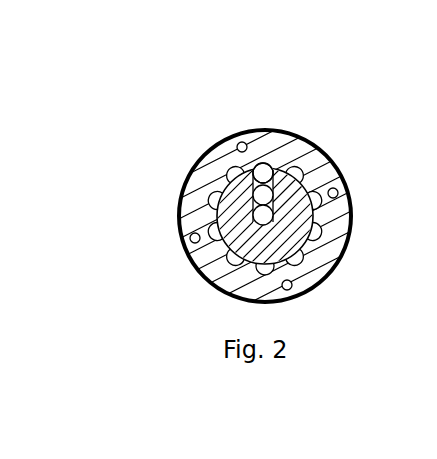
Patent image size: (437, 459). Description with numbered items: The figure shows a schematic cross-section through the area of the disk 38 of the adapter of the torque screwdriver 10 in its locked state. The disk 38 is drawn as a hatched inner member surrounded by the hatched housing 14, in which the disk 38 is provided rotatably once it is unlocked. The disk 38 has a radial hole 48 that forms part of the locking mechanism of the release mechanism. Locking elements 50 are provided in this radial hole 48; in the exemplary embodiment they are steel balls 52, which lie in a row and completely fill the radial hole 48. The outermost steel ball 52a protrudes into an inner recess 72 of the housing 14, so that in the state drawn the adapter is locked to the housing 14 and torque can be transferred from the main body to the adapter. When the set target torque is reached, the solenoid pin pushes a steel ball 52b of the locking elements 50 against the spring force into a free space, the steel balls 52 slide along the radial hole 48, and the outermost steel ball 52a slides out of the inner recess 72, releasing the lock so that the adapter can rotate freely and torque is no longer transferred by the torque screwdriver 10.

The torque screwdriver 10 is at (183, 137).
The housing 14 is at (323, 227).
The disk 38 is at (300, 232).
The radial hole 48 is at (285, 168).
The locking elements 50 is at (249, 212).
The steel balls 52 is at (262, 157).
The outermost steel ball 52a is at (276, 169).
The steel ball 52b is at (274, 230).
The inner recess 72 is at (268, 166).